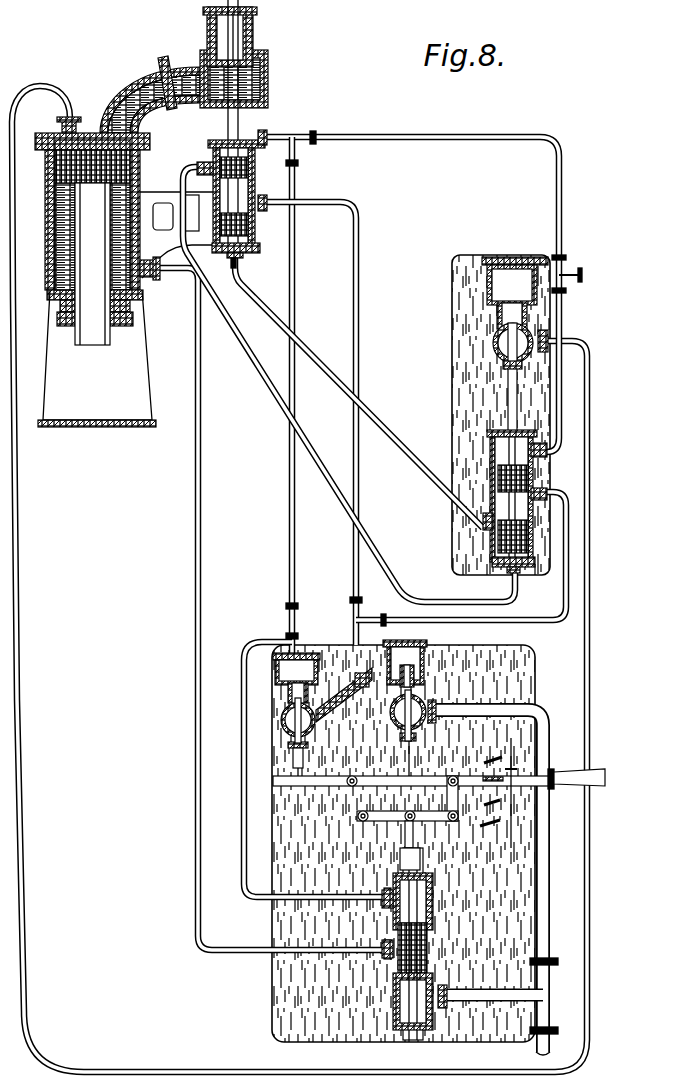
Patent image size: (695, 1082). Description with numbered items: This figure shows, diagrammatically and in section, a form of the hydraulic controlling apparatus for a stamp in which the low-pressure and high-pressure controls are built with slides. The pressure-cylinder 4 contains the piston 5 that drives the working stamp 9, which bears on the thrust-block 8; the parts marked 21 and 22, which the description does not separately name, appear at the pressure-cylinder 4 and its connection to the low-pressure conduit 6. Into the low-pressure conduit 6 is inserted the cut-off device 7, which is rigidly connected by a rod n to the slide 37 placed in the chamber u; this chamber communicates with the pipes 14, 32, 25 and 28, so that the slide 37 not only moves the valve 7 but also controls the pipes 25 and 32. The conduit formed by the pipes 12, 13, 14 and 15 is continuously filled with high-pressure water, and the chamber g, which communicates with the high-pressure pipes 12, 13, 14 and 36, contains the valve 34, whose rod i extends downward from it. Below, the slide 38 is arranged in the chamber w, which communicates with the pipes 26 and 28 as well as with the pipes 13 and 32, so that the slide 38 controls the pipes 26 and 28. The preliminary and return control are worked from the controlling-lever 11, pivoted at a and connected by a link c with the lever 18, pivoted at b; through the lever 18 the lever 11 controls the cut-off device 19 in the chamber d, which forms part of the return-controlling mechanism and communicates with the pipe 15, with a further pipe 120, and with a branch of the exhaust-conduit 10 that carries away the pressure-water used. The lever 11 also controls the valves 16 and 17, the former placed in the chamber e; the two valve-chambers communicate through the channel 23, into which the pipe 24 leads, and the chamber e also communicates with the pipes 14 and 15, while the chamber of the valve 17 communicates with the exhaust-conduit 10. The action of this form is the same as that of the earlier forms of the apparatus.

The pressure-cylinder 4 is at (47, 176).
The piston 5 is at (92, 161).
The low-pressure conduit 6 is at (244, 25).
The cut-off device 7 is at (248, 51).
The thrust-block 8 is at (96, 414).
The working stamp 9 is at (92, 264).
The exhaust-conduit 10 is at (538, 720).
The controlling-lever 11 is at (572, 785).
The high-pressure pipe 12 is at (579, 272).
The high-pressure pipe 13 is at (565, 396).
The high-pressure pipe 14 is at (362, 136).
The high-pressure pipe 15 is at (241, 763).
The valve 16 is at (296, 678).
The valve 17 is at (409, 709).
The lever 18 is at (404, 823).
The cut-off device 19 is at (422, 867).
The cylinder chamber 21 is at (52, 223).
The elbow pipe 22 is at (83, 138).
The channel 23 is at (345, 695).
The pipe 24 is at (358, 621).
The pipe 25 is at (361, 234).
The pipe 26 is at (542, 627).
The pipe 28 is at (342, 382).
The pipe 32 is at (263, 384).
The valve 34 is at (515, 293).
The high-pressure pipe 36 is at (580, 650).
The slide 37 is at (251, 225).
The slide 38 is at (516, 536).
The pipe 120 is at (195, 410).
The rod n is at (213, 134).
The slide-chamber u is at (247, 255).
The valve chamber g is at (496, 256).
The rod i is at (510, 381).
The slide-chamber w is at (546, 475).
The valve-chamber e is at (283, 729).
The pivot a is at (352, 788).
The pivot b is at (364, 822).
The link c is at (456, 797).
The chamber d is at (431, 933).